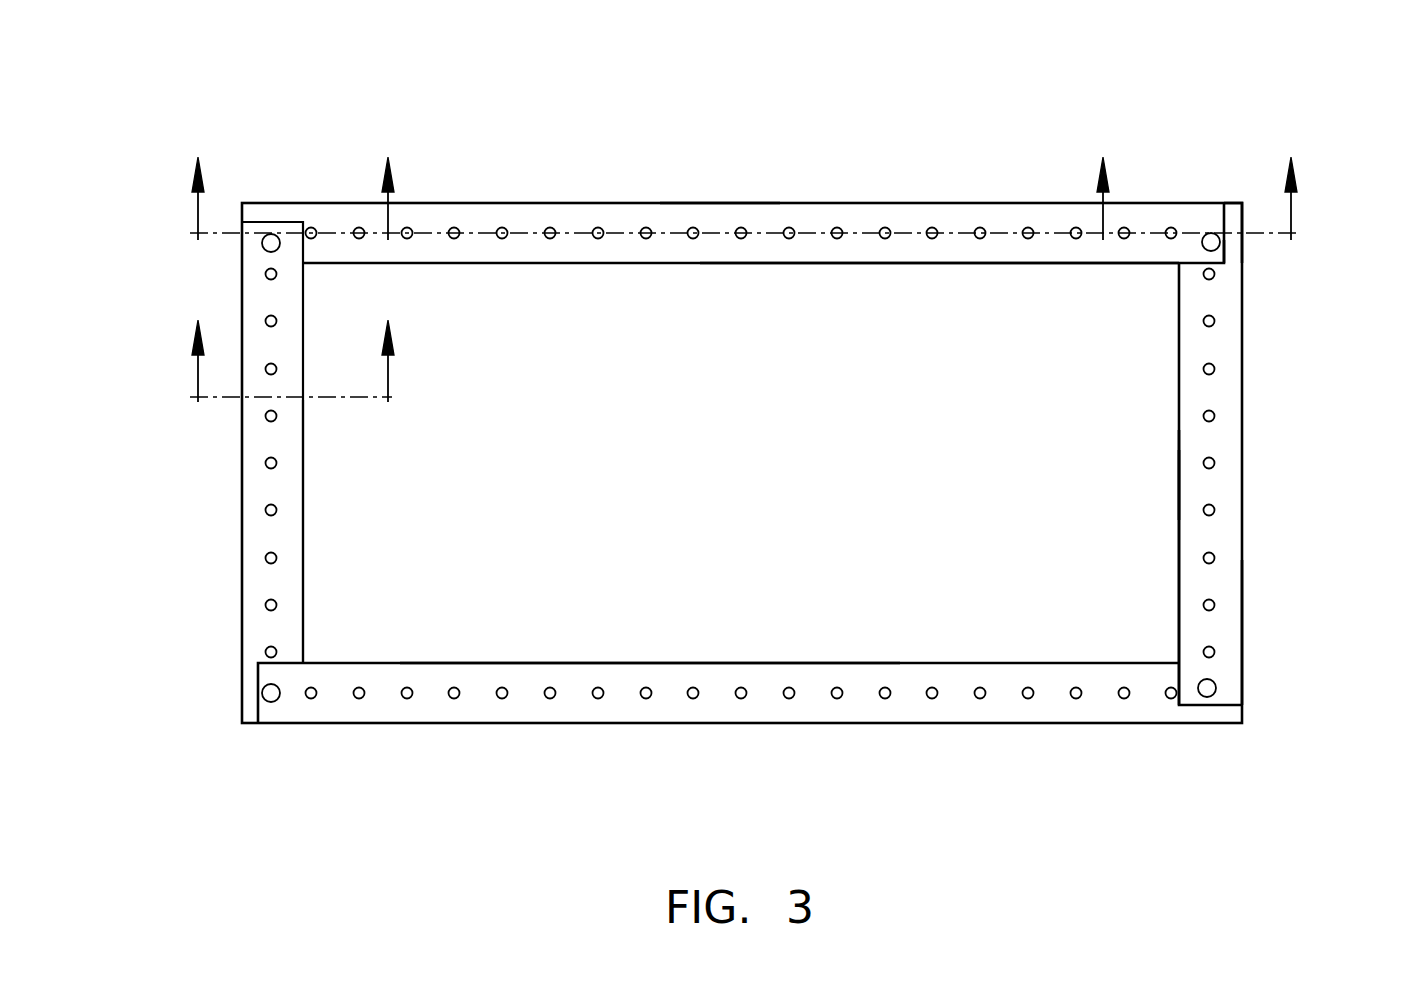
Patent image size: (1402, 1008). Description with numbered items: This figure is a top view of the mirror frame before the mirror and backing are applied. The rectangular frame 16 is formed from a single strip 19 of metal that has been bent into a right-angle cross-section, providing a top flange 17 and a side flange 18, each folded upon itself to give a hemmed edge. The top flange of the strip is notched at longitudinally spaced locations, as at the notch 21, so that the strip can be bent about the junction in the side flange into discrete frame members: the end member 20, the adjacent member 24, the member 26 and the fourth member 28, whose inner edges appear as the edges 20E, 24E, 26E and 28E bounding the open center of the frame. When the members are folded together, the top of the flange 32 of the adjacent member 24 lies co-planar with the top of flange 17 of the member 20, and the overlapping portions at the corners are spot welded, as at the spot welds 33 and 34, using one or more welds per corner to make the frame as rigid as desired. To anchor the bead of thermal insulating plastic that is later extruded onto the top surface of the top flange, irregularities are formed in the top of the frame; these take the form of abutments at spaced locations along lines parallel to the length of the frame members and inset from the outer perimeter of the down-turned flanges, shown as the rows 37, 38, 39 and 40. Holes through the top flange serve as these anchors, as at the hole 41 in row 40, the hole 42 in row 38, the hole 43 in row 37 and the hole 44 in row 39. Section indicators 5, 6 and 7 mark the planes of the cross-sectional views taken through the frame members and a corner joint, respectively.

The rectangular frame 16 is at (1262, 543).
The top flange 17 is at (1196, 490).
The side flange 18 is at (1240, 634).
The strip 19 is at (1225, 247).
The member 20 is at (1260, 575).
The inner edge of right side rail 20E is at (1178, 594).
The notch 21 is at (1243, 215).
The member 24 is at (947, 170).
The lower edge of top rail 24E is at (965, 265).
The member 26 is at (228, 492).
The inner edge of left side rail 26E is at (303, 572).
The member 28 is at (510, 760).
The upper edge of bottom rail 28E is at (632, 662).
The flange 32 is at (715, 222).
The spot weld 33 is at (1211, 233).
The spot weld 34 is at (273, 236).
The row of abutments 37 is at (1212, 507).
The row of abutments 38 is at (455, 230).
The row of abutments 39 is at (264, 561).
The row of abutments 40 is at (982, 700).
The hole 41 is at (741, 695).
The hole 42 is at (599, 228).
The hole 43 is at (1208, 556).
The hole 44 is at (268, 608).
The section line 5- 5 is at (293, 342).
The section line 6- 6 is at (745, 180).
The section line 7- 7 is at (1199, 179).